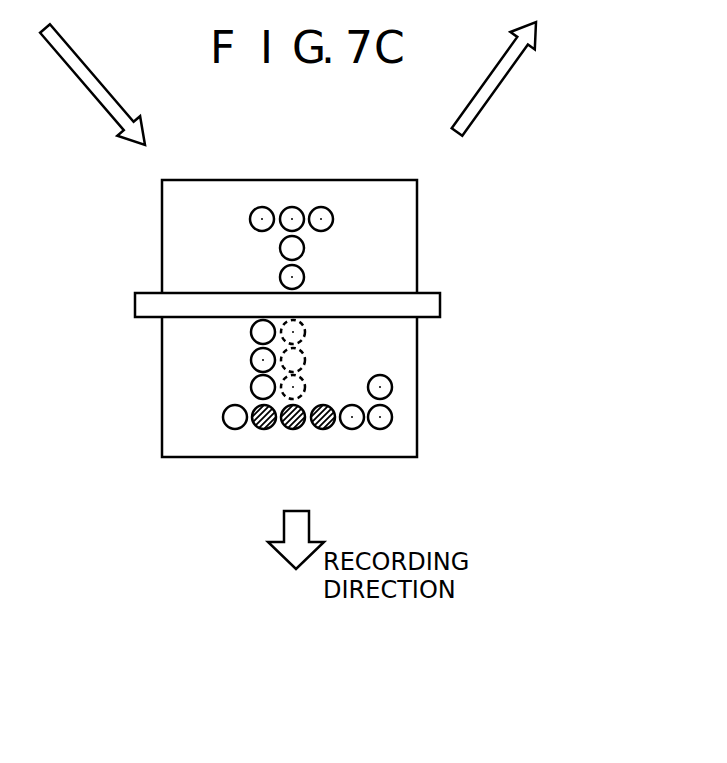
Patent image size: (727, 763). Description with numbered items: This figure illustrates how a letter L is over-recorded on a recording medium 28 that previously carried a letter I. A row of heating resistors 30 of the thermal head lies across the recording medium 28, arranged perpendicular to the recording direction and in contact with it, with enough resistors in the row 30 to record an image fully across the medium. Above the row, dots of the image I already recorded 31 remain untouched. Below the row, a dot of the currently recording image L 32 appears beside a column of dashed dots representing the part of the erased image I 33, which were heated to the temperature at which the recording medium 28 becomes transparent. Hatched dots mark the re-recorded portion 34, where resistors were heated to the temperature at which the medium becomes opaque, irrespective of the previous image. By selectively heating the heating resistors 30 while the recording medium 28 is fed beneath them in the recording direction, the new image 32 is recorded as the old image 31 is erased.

The recording medium 28 is at (411, 250).
The row of heating resistors 30 is at (135, 310).
The part of the image already recorded 31 is at (293, 206).
The part of the currently recording image 32 is at (223, 424).
The part of the erased image 33 is at (308, 323).
The re-recorded portion 34 is at (250, 432).